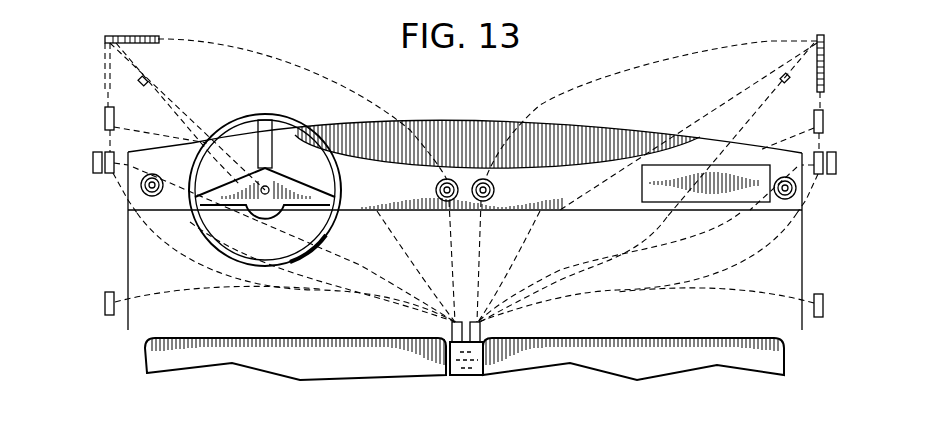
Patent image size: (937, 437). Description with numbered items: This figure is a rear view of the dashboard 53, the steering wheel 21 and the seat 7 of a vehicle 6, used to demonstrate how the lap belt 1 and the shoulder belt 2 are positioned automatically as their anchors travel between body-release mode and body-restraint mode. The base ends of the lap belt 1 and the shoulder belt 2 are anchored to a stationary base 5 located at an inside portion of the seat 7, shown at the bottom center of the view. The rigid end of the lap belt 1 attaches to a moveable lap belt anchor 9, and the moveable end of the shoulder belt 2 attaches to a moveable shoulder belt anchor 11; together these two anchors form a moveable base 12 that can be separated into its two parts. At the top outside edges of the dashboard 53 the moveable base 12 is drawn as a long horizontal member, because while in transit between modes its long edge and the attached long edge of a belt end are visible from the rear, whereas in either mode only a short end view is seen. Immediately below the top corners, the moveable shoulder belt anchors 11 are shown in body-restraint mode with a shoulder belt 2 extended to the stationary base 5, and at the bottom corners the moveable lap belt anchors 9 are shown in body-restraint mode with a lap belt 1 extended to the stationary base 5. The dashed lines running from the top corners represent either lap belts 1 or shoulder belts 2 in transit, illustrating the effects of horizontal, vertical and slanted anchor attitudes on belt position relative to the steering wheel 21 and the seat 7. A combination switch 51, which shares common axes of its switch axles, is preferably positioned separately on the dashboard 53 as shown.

The lap belt 1 is at (172, 295).
The shoulder belt 2 is at (150, 135).
The stationary base 5 is at (467, 358).
The vehicle 6 is at (803, 243).
The seat 7 is at (252, 352).
The moveable lap belt anchor 9 is at (93, 163).
The moveable shoulder belt anchor 11 is at (97, 152).
The moveable base 12 is at (105, 39).
The steering wheel 21 is at (262, 118).
The combination switch 51 is at (145, 187).
The dashboard 53 is at (485, 178).